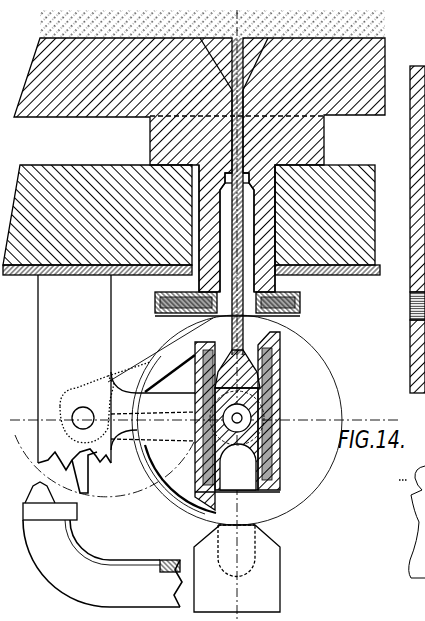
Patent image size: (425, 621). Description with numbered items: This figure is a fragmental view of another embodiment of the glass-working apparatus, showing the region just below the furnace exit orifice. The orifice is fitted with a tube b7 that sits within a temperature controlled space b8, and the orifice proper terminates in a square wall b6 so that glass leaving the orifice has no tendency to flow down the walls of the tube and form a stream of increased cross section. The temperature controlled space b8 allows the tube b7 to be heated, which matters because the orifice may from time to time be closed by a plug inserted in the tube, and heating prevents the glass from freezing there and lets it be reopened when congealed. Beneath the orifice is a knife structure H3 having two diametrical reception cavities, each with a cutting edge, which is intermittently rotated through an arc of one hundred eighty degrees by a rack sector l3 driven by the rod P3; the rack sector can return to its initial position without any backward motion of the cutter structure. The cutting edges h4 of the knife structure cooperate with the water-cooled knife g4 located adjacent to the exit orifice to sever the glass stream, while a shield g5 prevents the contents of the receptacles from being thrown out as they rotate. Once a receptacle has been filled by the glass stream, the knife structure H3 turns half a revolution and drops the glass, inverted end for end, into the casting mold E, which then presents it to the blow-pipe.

The tube b7 is at (222, 174).
The square wall b6 is at (290, 161).
The temperature controlled space b8 is at (197, 237).
The rack sector l3 is at (128, 375).
The cutting edges h4 is at (300, 317).
The water-cooled knife g4 is at (247, 326).
The knife structure H3 is at (281, 396).
The shield g5 is at (142, 482).
The casting mold E is at (256, 577).
The rod P3 is at (110, 578).